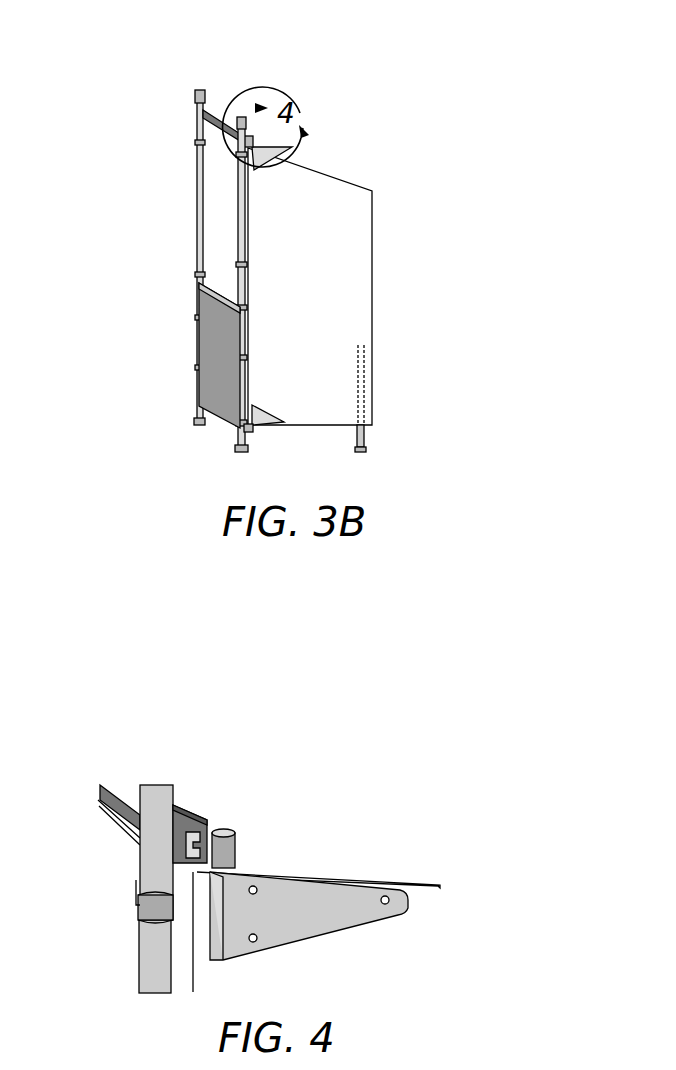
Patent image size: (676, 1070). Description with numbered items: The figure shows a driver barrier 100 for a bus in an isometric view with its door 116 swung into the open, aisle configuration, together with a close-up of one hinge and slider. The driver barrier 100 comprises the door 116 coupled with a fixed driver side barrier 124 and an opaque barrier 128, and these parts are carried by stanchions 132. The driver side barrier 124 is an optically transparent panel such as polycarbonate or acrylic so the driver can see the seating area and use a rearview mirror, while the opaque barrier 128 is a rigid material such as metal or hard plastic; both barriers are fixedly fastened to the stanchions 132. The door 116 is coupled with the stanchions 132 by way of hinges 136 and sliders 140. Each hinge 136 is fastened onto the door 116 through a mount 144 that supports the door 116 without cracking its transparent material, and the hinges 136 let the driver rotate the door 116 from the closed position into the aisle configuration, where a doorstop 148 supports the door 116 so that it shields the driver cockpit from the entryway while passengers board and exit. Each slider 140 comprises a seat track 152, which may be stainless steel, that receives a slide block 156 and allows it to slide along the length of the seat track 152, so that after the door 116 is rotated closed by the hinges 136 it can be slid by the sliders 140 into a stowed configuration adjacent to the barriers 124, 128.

In FIG. 3B, the driver barrier 100 is at (385, 70).
In FIG. 3B, the door 116 is at (312, 237).
In FIG. 4, the door 116 is at (365, 950).
In FIG. 3B, the driver side barrier 124 is at (212, 152).
In FIG. 4, the driver side barrier 124 is at (128, 863).
In FIG. 3B, the opaque barrier 128 is at (213, 352).
In FIG. 3B, the stanchions 132 is at (240, 262).
In FIG. 4, the stanchions 132 is at (145, 952).
In FIG. 3B, the hinge 136 is at (247, 429).
In FIG. 4, the hinge 136 is at (237, 829).
In FIG. 3B, the slider 140 is at (234, 134).
In FIG. 4, the slider 140 is at (213, 804).
In FIG. 4, the mount 144 is at (333, 897).
In FIG. 3B, the doorstop 148 is at (362, 436).
In FIG. 4, the seat track 152 is at (125, 790).
In FIG. 4, the slide block 156 is at (197, 846).